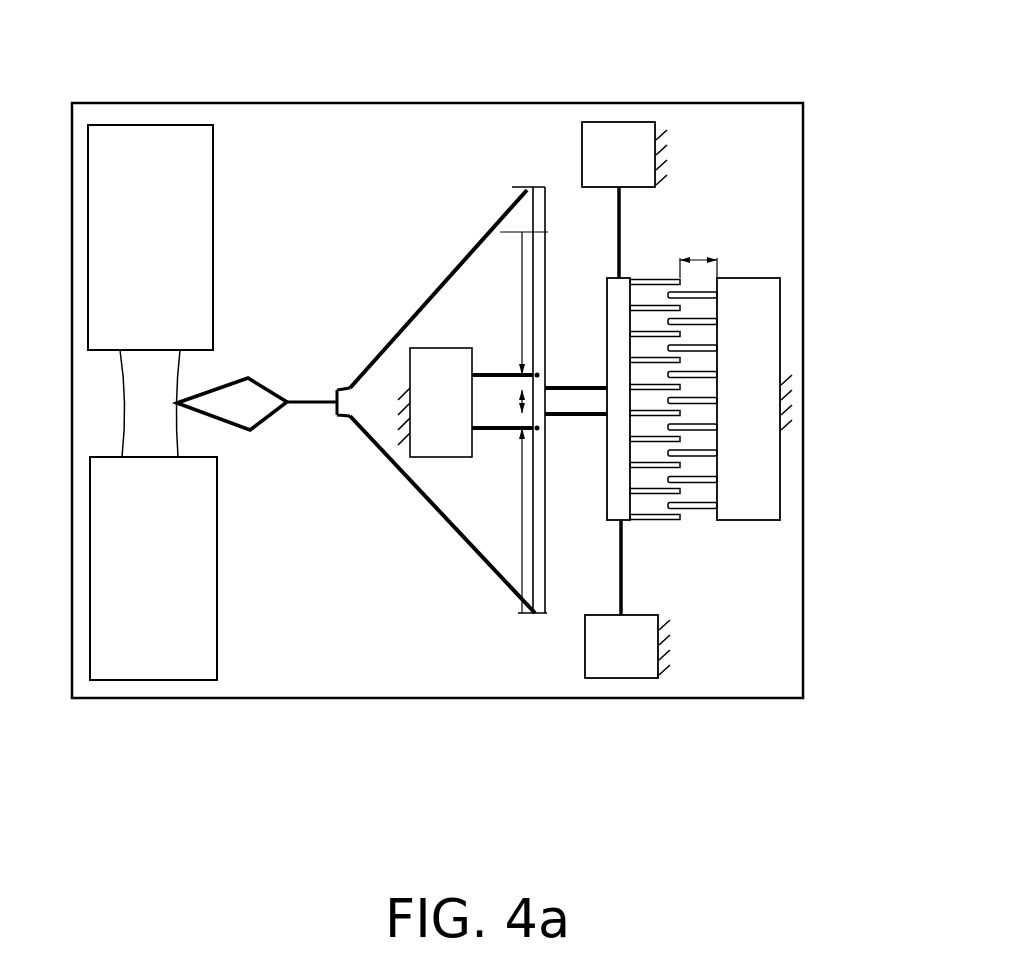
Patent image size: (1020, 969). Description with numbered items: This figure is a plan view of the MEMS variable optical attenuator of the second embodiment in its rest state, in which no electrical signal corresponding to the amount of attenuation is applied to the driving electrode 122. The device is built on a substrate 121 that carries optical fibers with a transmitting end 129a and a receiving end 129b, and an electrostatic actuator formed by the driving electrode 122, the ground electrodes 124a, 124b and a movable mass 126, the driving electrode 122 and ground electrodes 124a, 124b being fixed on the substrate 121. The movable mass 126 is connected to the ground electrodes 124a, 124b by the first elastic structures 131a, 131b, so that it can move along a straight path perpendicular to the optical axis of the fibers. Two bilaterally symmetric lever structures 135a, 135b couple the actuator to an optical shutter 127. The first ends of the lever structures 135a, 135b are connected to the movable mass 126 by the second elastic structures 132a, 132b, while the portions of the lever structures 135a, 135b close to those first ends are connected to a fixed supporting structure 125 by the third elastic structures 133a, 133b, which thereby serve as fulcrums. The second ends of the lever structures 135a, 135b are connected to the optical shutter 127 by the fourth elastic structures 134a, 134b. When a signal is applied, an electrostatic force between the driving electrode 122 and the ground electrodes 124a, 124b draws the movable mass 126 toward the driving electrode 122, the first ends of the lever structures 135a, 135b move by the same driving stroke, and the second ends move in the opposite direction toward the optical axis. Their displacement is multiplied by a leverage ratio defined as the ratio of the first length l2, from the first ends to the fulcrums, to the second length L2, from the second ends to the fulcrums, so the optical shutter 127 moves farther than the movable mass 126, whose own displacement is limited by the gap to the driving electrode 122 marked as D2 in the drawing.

The substrate 121 is at (752, 700).
The driving electrode 122 is at (762, 467).
The ground electrode 124a is at (612, 125).
The ground electrode 124b is at (628, 673).
The supporting structure 125 is at (445, 358).
The movable mass 126 is at (623, 512).
The optical shutter 127 is at (247, 388).
The transmitting end 129a is at (165, 128).
The receiving end 129b is at (160, 670).
The first elastic structure 131a is at (620, 236).
The first elastic structure 131b is at (622, 573).
The second elastic structure 132a is at (565, 385).
The second elastic structure 132b is at (572, 420).
The third elastic structure 133a is at (512, 372).
The third elastic structure 133b is at (497, 433).
The fourth elastic structure 134a is at (410, 313).
The fourth elastic structure 134b is at (430, 505).
The first lever structure 135a is at (498, 228).
The second lever structure 135b is at (540, 563).
The second length L2 is at (500, 234).
The first length l2 is at (522, 380).
The comb displacement dimension D2 is at (712, 258).